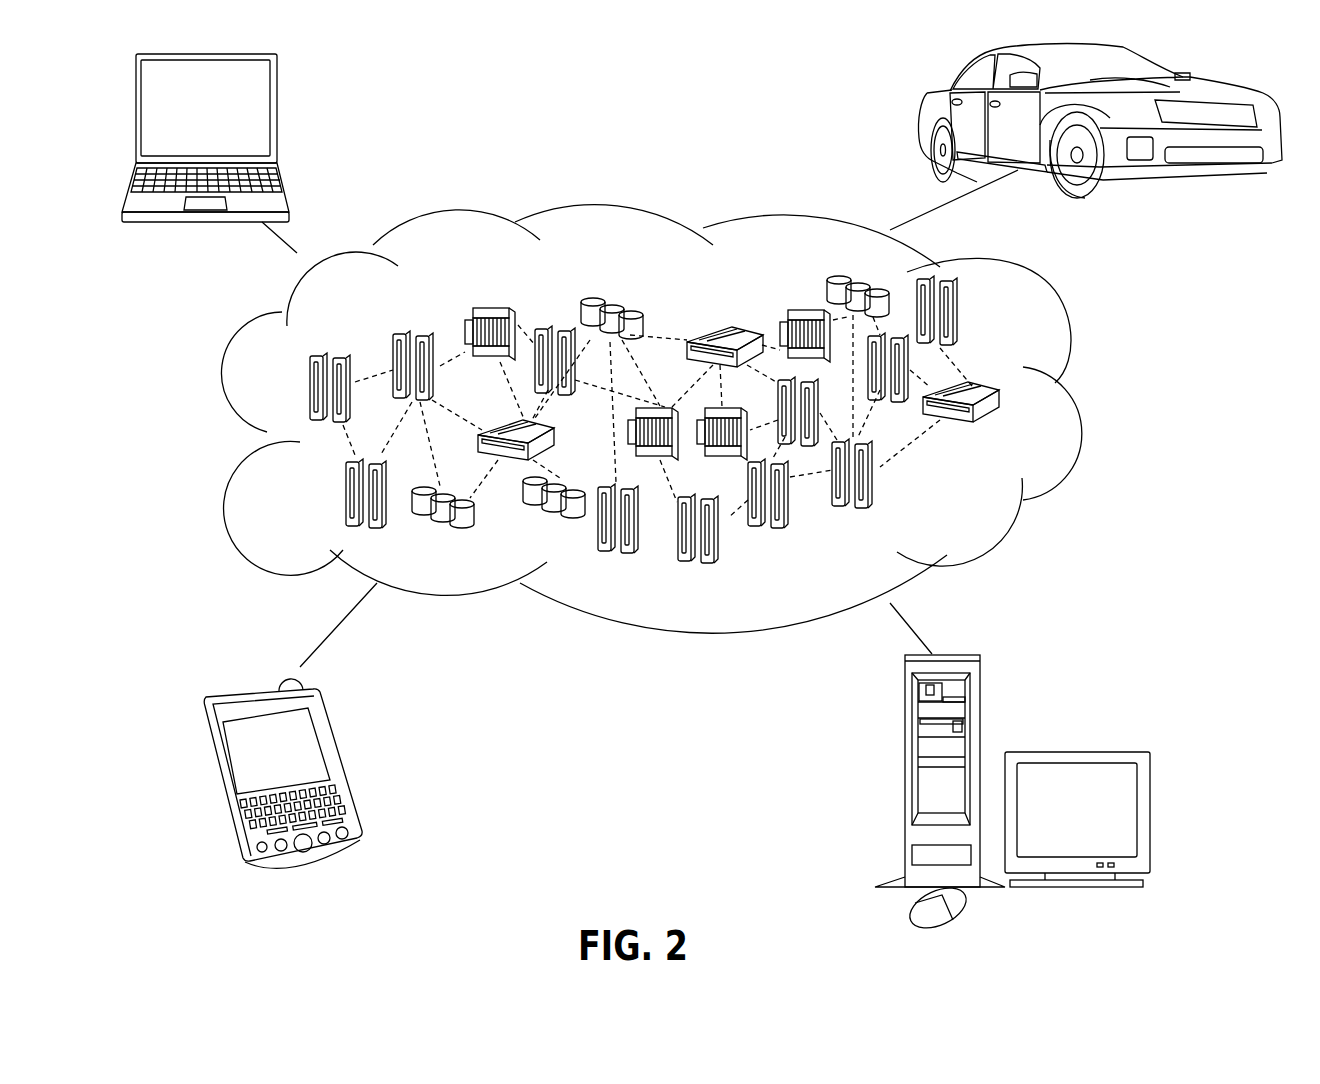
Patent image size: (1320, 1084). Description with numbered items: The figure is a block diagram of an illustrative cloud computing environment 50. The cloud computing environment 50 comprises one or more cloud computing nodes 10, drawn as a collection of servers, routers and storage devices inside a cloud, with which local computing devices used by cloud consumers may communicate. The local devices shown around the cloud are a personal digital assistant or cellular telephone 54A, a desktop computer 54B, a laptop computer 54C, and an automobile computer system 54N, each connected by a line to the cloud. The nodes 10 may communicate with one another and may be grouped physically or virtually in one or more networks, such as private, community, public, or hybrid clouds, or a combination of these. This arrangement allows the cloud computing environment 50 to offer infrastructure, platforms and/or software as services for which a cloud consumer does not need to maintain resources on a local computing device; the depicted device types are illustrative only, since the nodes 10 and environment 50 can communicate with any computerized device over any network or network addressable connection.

The cloud computing nodes 10 is at (702, 490).
The cloud computing environment 50 is at (1073, 400).
The personal digital assistant or cellular telephone 54A is at (330, 730).
The desktop computer 54B is at (905, 714).
The laptop computer 54C is at (277, 92).
The automobile computer system 54N is at (923, 105).